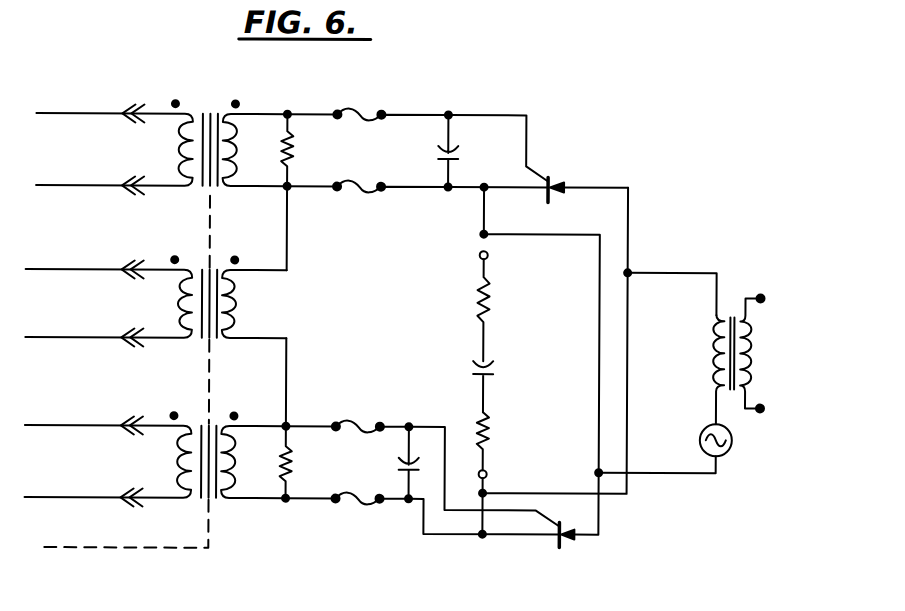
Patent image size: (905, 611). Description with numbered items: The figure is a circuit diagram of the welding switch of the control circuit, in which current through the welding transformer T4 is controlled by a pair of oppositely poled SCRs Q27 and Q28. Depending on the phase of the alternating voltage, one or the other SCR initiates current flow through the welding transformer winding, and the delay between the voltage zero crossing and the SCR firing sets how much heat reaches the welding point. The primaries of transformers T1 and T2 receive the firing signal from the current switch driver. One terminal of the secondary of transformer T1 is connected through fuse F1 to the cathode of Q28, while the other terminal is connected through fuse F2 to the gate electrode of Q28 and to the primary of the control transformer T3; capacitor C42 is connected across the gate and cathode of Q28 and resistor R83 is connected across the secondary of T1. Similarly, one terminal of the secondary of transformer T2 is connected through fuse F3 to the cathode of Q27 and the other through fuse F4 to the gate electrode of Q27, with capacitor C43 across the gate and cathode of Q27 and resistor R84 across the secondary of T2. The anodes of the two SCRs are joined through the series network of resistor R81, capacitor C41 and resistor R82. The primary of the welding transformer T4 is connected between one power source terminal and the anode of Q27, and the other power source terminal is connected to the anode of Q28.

The transformer T1 is at (155, 459).
The transformer T2 is at (161, 147).
The control transformer T3 is at (155, 301).
The welding transformer T4 is at (739, 343).
The resistor R81 is at (485, 440).
The resistor R82 is at (483, 308).
The resistor R83 is at (313, 472).
The resistor R84 is at (314, 153).
The capacitor C41 is at (512, 378).
The capacitor C42 is at (403, 471).
The capacitor C43 is at (451, 165).
The fuse F1 is at (362, 505).
The fuse F2 is at (366, 423).
The fuse F3 is at (362, 193).
The fuse F4 is at (362, 120).
The SCR Q27 is at (548, 178).
The SCR Q28 is at (562, 543).